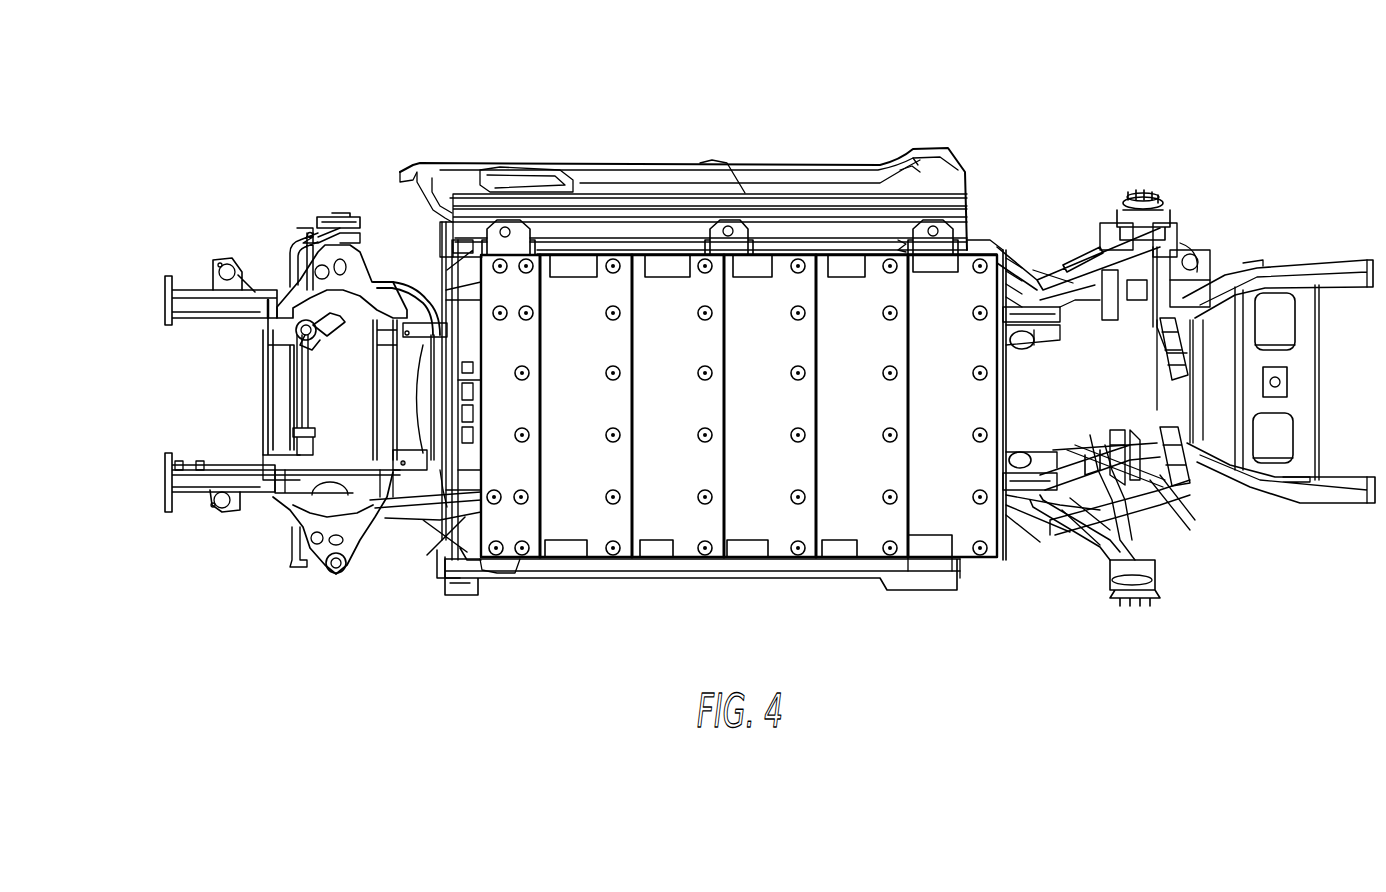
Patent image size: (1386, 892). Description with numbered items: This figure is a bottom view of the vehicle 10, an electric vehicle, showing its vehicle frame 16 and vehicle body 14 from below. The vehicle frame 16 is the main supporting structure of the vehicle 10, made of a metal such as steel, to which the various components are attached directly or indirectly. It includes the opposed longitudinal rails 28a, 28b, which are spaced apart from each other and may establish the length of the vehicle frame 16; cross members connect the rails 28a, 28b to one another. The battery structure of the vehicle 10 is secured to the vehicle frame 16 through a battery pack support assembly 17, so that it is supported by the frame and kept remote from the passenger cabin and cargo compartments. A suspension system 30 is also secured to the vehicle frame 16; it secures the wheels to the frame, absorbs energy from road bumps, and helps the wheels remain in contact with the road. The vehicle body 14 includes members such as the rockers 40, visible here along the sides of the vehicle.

The vehicle 10 is at (545, 68).
The vehicle body 14 is at (808, 162).
The vehicle frame 16 is at (198, 280).
The battery pack support assembly 17 is at (721, 345).
The longitudinal rail 28a is at (463, 517).
The longitudinal rail 28b is at (935, 262).
The suspension system 30 is at (1073, 573).
The rocker 40 is at (665, 573).